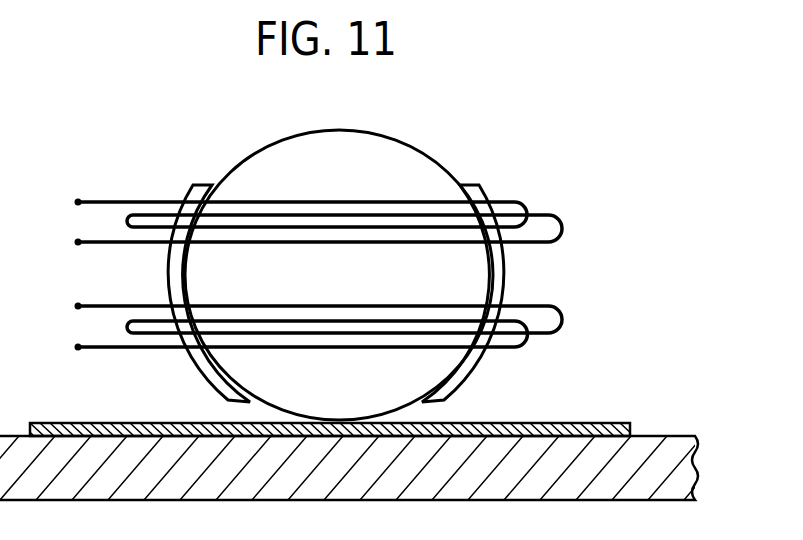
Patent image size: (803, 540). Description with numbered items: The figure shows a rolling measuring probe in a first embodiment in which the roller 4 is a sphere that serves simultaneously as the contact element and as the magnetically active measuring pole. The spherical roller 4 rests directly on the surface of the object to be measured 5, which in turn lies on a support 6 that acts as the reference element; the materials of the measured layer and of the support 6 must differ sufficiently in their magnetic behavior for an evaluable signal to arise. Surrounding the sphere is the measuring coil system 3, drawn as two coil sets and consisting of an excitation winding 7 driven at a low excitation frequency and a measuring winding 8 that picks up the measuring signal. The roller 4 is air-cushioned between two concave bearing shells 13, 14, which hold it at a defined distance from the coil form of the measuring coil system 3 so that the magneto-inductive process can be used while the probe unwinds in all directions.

The measuring coil system 3 is at (362, 257).
The roller 4 is at (418, 152).
The object to be measured 5 is at (612, 423).
The support 6 is at (695, 457).
The excitation winding 7 is at (558, 212).
The measuring winding 8 is at (337, 346).
The concave bearing shell 13 is at (193, 188).
The concave bearing shell 14 is at (473, 190).